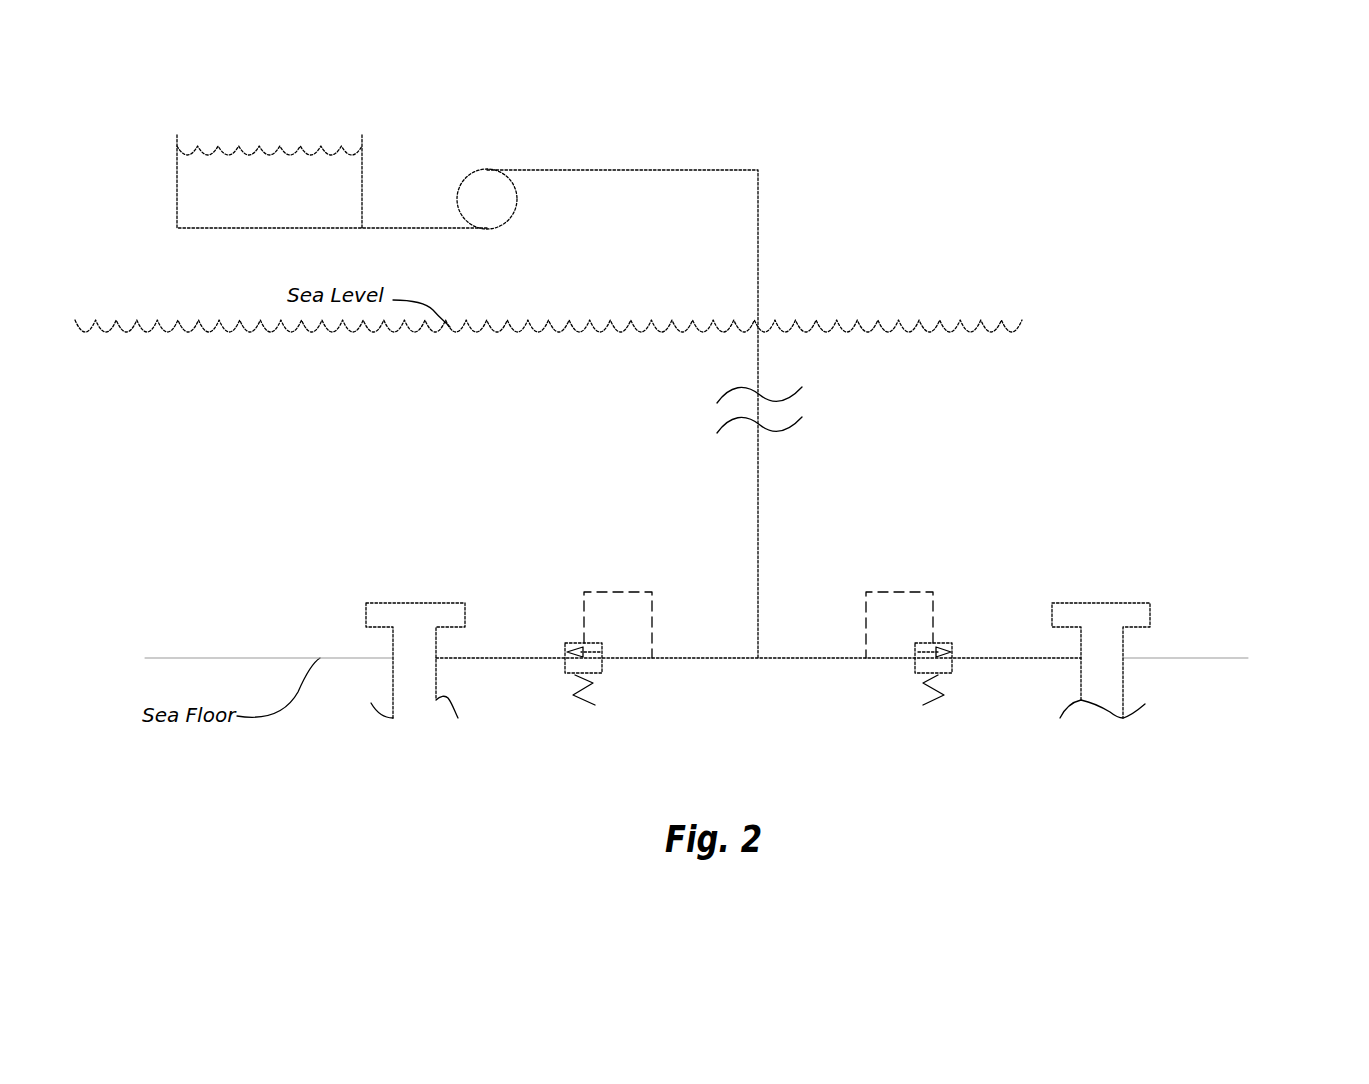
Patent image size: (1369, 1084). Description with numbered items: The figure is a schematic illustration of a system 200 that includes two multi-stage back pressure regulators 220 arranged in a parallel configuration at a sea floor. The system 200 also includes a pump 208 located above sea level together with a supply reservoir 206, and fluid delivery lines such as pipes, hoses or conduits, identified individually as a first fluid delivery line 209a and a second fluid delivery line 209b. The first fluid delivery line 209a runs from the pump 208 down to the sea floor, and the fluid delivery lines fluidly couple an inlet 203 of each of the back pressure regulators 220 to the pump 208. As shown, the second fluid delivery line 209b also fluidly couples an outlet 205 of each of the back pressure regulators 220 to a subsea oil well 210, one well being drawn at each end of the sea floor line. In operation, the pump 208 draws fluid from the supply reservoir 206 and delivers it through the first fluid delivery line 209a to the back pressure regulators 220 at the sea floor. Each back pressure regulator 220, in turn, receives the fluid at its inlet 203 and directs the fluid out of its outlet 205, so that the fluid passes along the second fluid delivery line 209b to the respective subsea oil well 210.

The system 200 is at (928, 236).
The inlet 203 is at (673, 640).
The outlet 205 is at (540, 632).
The supply reservoir 206 is at (177, 195).
The pump 208 is at (517, 198).
The first fluid delivery line 209a is at (758, 490).
The second fluid delivery line 209b is at (503, 657).
The subsea oil well 210 is at (392, 612).
The back pressure regulator 220 is at (602, 664).